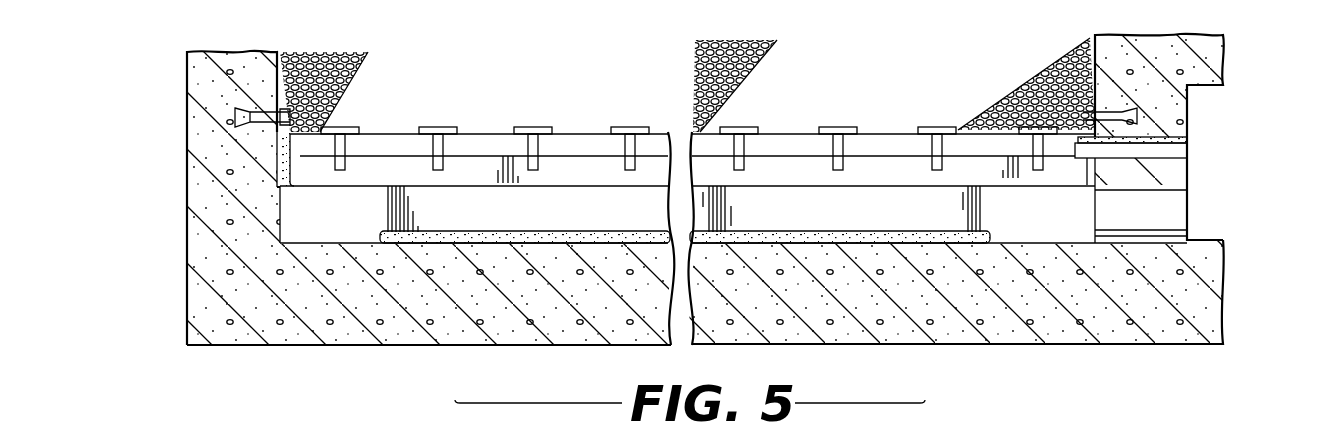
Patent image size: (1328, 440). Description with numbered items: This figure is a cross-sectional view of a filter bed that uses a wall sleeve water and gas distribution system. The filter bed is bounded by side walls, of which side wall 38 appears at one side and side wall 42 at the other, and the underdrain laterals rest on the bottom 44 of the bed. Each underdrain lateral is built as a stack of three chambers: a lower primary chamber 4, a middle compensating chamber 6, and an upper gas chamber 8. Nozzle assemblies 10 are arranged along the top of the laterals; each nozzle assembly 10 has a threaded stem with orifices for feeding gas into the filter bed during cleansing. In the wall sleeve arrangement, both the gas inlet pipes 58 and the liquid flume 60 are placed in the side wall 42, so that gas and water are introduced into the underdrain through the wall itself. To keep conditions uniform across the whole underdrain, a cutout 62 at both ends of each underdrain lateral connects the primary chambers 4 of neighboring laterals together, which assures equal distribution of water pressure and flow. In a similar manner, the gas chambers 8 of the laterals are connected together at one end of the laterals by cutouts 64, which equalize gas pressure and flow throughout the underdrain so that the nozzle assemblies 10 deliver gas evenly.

The primary chamber 4 is at (468, 197).
The compensating chamber 6 is at (892, 162).
The gas chamber 8 is at (782, 145).
The nozzle assembly 10 is at (533, 127).
The side wall 38 is at (200, 232).
The side wall 42 is at (1187, 112).
The bottom 44 is at (1007, 330).
The gas inlet pipe 58 is at (1185, 148).
The liquid flume 60 is at (1185, 220).
The cutout 62 is at (353, 198).
The cutout 64 is at (300, 156).